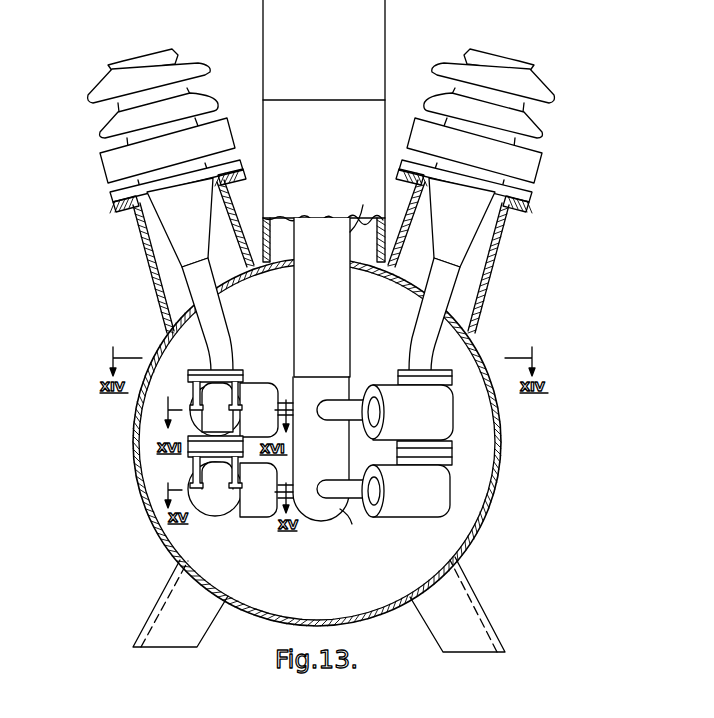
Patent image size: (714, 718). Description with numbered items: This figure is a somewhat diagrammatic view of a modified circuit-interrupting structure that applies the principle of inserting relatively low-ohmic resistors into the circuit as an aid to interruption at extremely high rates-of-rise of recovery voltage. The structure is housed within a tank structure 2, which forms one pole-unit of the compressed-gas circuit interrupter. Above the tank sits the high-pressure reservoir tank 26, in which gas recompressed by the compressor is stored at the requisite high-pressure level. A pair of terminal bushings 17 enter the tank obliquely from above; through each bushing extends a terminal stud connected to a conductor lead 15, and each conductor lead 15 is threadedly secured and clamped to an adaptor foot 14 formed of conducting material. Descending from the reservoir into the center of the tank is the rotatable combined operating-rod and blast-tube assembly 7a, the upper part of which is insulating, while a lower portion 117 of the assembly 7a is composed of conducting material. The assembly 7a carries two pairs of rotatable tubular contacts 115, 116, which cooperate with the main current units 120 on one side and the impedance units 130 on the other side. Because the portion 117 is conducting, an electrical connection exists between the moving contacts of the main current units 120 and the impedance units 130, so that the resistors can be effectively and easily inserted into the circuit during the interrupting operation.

The tank structure 2 is at (493, 499).
The combined operating-rod and blast-tube assembly 7a is at (352, 289).
The adaptor foot 14 is at (188, 371).
The conductor lead 15 is at (197, 296).
The terminal bushing 17 is at (88, 97).
The high-pressure reservoir tank 26 is at (386, 112).
The rotatable tubular contact 115 is at (345, 400).
The rotatable tubular contact 116 is at (345, 480).
The conducting portion 117 is at (353, 452).
The main current unit 120 is at (235, 516).
The impedance unit 130 is at (256, 384).